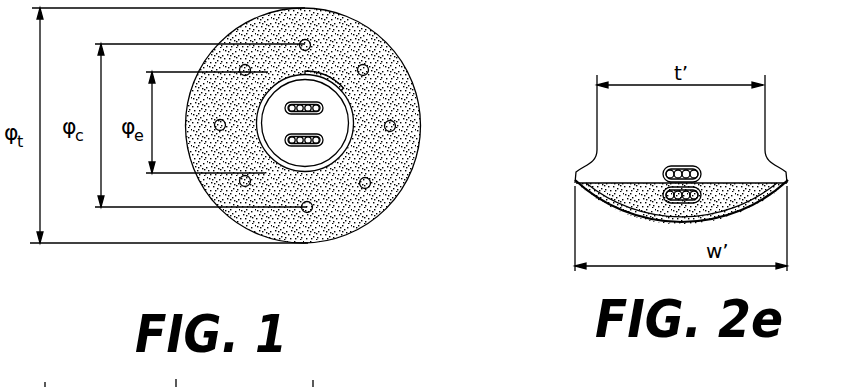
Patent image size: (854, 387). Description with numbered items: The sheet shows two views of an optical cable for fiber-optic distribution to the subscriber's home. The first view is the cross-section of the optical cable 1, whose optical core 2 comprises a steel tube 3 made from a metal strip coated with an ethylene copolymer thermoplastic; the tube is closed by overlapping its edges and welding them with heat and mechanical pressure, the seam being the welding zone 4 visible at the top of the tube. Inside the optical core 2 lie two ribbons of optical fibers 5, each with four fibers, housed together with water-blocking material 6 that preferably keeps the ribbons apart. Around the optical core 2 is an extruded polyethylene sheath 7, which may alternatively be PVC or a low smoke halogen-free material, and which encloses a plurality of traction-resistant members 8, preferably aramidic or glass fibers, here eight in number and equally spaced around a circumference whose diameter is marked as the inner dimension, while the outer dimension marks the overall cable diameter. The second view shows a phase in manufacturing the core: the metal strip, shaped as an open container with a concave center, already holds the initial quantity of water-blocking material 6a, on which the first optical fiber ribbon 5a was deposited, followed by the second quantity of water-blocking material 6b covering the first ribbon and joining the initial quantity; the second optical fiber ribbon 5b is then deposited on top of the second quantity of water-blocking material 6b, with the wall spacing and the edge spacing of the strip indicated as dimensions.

In FIG. 1, the optical cable 1 is at (212, 254).
In FIG. 1, the optical core 2 is at (328, 180).
In FIG. 1, the steel tube 3 is at (355, 119).
In FIG. 1, the welding zone 4 is at (338, 89).
In FIG. 1, the ribbons of optical fibers 5 is at (321, 110).
In FIG. 1, the water-blocking material 6 is at (342, 136).
In FIG. 1, the sheath 7 is at (338, 29).
In FIG. 1, the traction-resistant members 8 is at (368, 189).
In FIG. 2e, the first optical fiber ribbon 5a is at (712, 188).
In FIG. 2e, the second optical fiber ribbon 5b is at (683, 166).
In FIG. 2e, the initial quantity of water-blocking material 6a is at (649, 212).
In FIG. 2e, the second quantity of water-blocking material 6b is at (632, 191).